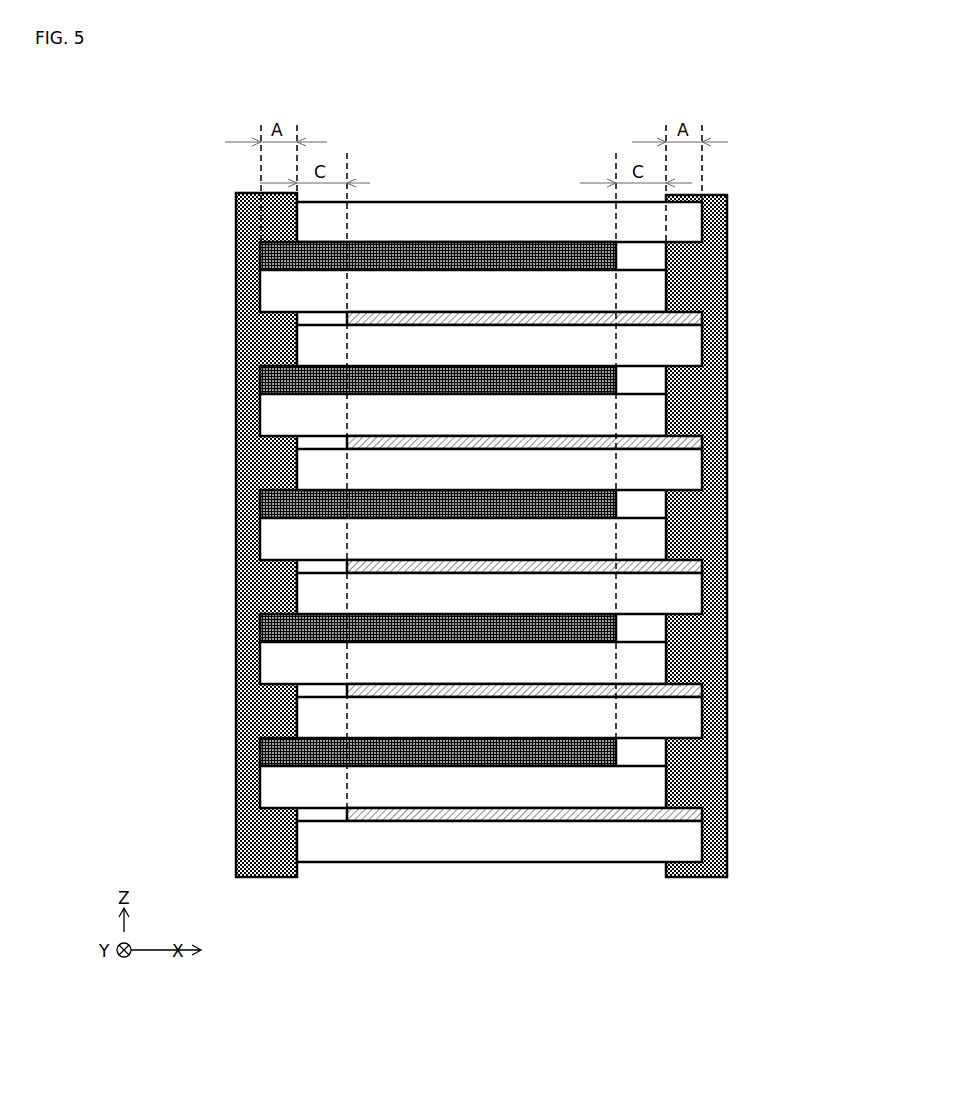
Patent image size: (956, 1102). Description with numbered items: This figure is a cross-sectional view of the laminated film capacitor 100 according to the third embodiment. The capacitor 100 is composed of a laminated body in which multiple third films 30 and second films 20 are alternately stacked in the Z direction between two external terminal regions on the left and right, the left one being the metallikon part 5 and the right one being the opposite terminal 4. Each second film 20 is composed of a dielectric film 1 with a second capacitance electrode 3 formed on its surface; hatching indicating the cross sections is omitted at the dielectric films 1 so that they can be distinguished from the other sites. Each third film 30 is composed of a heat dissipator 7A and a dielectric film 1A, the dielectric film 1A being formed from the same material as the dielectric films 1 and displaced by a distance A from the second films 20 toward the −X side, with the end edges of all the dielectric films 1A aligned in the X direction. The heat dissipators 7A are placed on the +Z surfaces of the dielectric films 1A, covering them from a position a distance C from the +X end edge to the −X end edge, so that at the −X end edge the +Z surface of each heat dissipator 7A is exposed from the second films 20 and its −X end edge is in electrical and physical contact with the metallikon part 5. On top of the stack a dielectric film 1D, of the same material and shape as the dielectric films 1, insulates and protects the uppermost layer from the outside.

The laminated film capacitor 100 is at (478, 513).
The dielectric film 1D is at (698, 220).
The metallikon part 5 is at (242, 857).
The second external electrode 4 is at (718, 866).
The third film 30 is at (396, 511).
The heat dissipator 7A is at (265, 258).
The dielectric film 1A is at (265, 283).
The second film 20 is at (563, 572).
The second capacitance electrode 3 is at (698, 320).
The dielectric film 1 is at (698, 354).